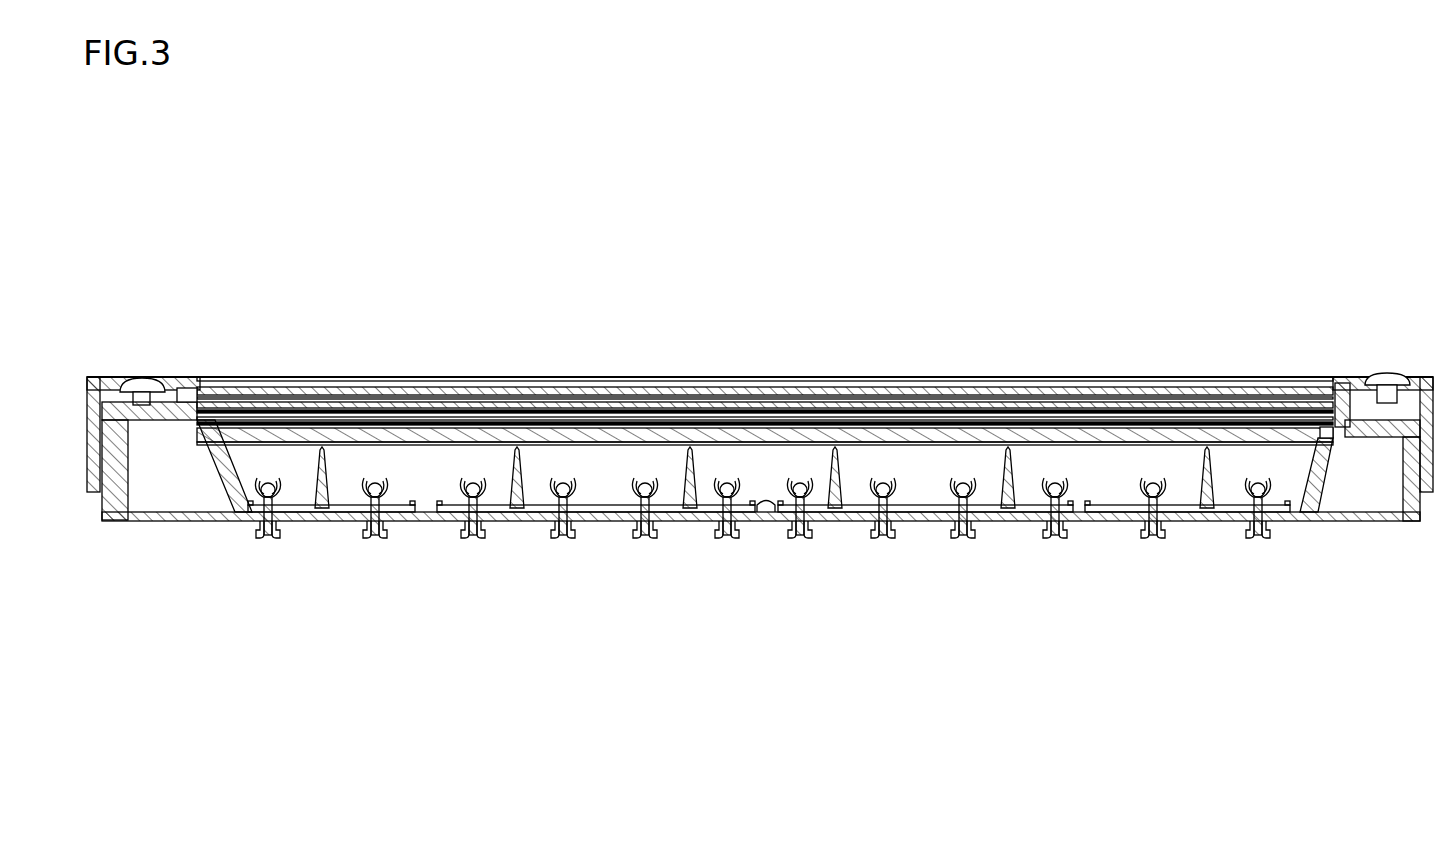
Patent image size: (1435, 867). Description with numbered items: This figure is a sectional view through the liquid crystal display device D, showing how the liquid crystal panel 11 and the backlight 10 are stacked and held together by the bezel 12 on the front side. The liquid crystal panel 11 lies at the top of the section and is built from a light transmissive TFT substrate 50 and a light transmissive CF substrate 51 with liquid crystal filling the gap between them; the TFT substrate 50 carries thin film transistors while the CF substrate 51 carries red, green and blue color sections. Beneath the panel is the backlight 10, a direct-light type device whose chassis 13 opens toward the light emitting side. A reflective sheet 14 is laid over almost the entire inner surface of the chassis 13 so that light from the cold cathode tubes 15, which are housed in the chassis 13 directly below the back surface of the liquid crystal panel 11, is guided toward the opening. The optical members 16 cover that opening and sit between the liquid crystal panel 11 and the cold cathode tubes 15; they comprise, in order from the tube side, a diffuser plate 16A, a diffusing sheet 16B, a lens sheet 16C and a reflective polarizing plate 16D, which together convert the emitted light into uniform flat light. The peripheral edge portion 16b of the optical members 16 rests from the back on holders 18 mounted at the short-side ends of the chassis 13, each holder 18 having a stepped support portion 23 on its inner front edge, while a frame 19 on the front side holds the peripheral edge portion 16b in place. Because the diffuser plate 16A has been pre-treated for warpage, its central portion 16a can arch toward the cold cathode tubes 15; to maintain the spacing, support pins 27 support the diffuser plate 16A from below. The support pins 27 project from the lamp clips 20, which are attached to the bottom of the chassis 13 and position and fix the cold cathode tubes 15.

The liquid crystal display device D is at (430, 243).
The backlight 10 is at (484, 665).
The liquid crystal panel 11 is at (715, 380).
The bezel 12 is at (200, 398).
The chassis 13 is at (752, 522).
The reflective sheet 14 is at (772, 522).
The cold cathode tube 15 is at (262, 480).
The optical members 16 is at (765, 311).
The diffuser plate 16A is at (848, 268).
The diffusing sheet 16B is at (1013, 378).
The lens sheet 16C is at (955, 378).
The reflective polarizing plate 16D is at (898, 378).
The central portion 16a is at (605, 400).
The peripheral edge portion 16b is at (1313, 440).
The holder 18 is at (118, 398).
The frame 19 is at (222, 415).
The lamp clip 20 is at (771, 505).
The support portion 23 is at (1338, 437).
The support pin 27 is at (320, 448).
The TFT substrate 50 is at (1283, 445).
The CF substrate 51 is at (1232, 428).